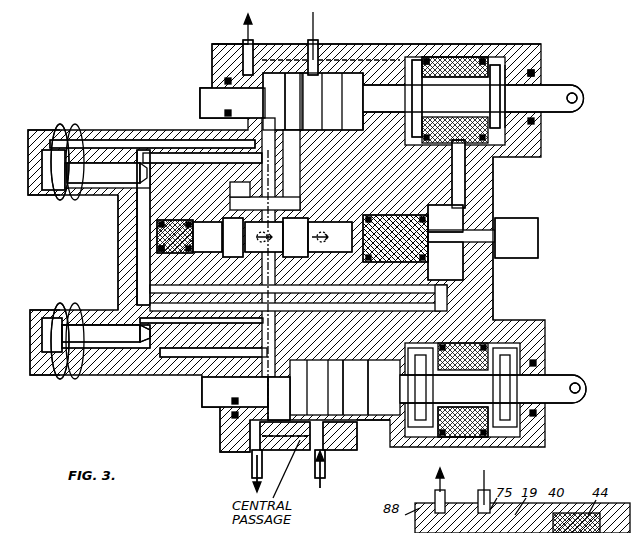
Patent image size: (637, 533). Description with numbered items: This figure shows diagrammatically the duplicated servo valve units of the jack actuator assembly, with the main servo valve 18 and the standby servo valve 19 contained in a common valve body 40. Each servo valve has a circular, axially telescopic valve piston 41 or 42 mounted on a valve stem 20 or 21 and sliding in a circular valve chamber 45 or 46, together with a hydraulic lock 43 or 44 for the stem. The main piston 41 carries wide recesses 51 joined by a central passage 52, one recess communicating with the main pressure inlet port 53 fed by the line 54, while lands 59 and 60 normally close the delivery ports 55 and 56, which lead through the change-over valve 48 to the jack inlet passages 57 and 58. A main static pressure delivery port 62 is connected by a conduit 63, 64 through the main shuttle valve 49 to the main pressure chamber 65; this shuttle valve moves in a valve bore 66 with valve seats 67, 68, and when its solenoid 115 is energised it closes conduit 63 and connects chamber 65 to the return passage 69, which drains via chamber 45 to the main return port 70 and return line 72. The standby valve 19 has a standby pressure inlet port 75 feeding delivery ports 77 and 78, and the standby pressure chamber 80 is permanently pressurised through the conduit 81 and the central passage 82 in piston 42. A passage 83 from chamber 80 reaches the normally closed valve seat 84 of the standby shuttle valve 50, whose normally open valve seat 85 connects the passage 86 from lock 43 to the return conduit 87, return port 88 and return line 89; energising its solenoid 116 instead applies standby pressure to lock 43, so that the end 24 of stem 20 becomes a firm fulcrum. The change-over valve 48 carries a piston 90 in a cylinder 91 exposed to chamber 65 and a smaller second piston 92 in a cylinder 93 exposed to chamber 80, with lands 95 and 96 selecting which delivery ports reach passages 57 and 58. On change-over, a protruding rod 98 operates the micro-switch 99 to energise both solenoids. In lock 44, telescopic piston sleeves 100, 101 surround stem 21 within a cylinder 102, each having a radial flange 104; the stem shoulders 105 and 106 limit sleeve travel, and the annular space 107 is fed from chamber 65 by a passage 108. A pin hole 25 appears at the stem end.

The main servo valve 18 is at (345, 456).
The standby servo valve 19 is at (397, 85).
The valve stem 20 is at (540, 380).
The valve stem 21 is at (572, 88).
The end of the valve stem 24 is at (576, 382).
The pin hole 25 is at (580, 98).
The valve body 40 is at (497, 43).
The valve piston 41 is at (268, 473).
The valve piston 42 is at (298, 80).
The hydraulic lock 43 is at (490, 434).
The hydraulic lock 44 is at (530, 68).
The valve chamber 45 is at (353, 442).
The valve chamber 46 is at (370, 65).
The change-over valve 48 is at (445, 218).
The main shuttle valve 49 is at (100, 330).
The standby shuttle valve 50 is at (110, 168).
The recesses 51 is at (328, 444).
The central passage 52 is at (288, 442).
The main pressure inlet port 53 is at (318, 446).
The line 54 is at (324, 478).
The pressure fluid delivery port 55 is at (200, 356).
The pressure fluid delivery port 56 is at (358, 373).
The jack inlet passage 57 is at (264, 237).
The jack inlet passage 58 is at (295, 237).
The land 59 is at (262, 383).
The land 60 is at (357, 392).
The main static pressure delivery port 62 is at (279, 398).
The conduit 63 is at (160, 352).
The conduit 64 is at (233, 237).
The main pressure chamber 65 is at (465, 224).
The valve bore 66 is at (93, 348).
The valve seat 67 is at (128, 352).
The valve seat 68 is at (52, 365).
The return passage 69 is at (170, 350).
The main return port 70 is at (238, 441).
The return line 72 is at (250, 462).
The standby pressure inlet port 75 is at (318, 44).
The delivery port 77 is at (342, 101).
The delivery port 78 is at (270, 126).
The standby pressure chamber 80 is at (165, 215).
The conduit 81 is at (176, 160).
The central passage 82 is at (300, 101).
The passage 83 is at (141, 145).
The valve seat 84 is at (150, 193).
The valve seat 85 is at (52, 186).
The passage 86 is at (132, 240).
The return conduit 87 is at (40, 140).
The return port 88 is at (240, 62).
The return line 89 is at (244, 38).
The piston 90 is at (433, 250).
The cylinder 91 is at (463, 210).
The second piston 92 is at (165, 230).
The cylinder 93 is at (170, 249).
The land 95 is at (207, 237).
The land 96 is at (330, 237).
The protruding rod 98 is at (462, 238).
The micro-switch 99 is at (538, 234).
The telescopic piston sleeve 100 is at (448, 58).
The telescopic piston sleeve 101 is at (502, 66).
The cylinder 102 is at (472, 60).
The radial flange 104 is at (442, 60).
The circumferential shoulder 105 is at (414, 85).
The circumferential shoulder 106 is at (508, 74).
The annular space 107 is at (468, 142).
The passage 108 is at (460, 186).
The solenoid 115 is at (60, 318).
The solenoid 116 is at (72, 132).